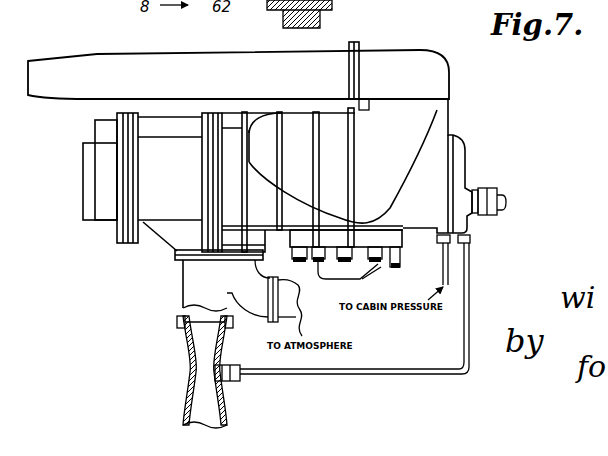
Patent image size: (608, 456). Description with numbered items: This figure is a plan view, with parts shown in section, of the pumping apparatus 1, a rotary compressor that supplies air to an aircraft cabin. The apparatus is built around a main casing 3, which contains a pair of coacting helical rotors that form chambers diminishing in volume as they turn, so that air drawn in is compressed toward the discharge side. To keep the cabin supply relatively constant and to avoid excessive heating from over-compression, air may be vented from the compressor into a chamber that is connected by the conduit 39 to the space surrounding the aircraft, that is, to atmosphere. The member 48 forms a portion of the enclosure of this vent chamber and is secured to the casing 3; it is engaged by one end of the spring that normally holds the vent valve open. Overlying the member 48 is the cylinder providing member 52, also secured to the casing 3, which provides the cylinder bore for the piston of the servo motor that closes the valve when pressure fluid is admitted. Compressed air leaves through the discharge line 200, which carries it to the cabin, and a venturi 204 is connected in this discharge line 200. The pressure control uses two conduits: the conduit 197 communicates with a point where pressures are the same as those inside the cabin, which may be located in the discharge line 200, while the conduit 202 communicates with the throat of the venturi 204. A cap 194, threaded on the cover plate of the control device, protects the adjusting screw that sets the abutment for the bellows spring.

The pumping apparatus 1 is at (452, 77).
The main casing 3 is at (449, 121).
The cap 194 is at (498, 196).
The member 48 is at (402, 249).
The cylinder providing member 52 is at (350, 279).
The conduit 39 is at (299, 312).
The discharge line 200 is at (183, 288).
The venturi 204 is at (188, 373).
The conduit 197 is at (450, 281).
The conduit 202 is at (425, 355).